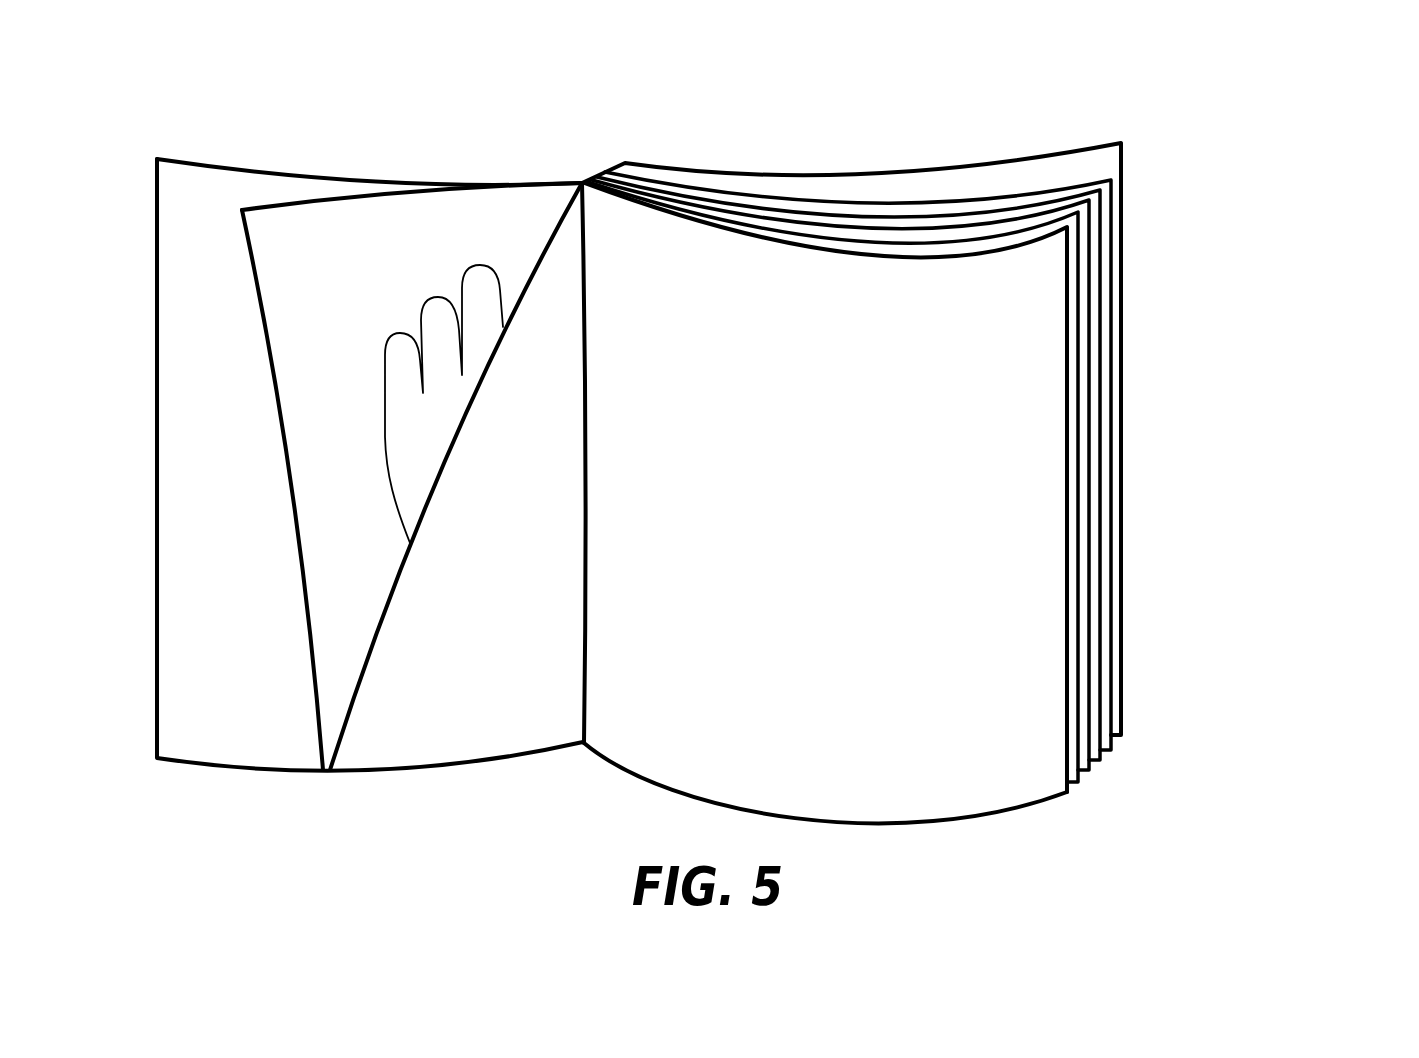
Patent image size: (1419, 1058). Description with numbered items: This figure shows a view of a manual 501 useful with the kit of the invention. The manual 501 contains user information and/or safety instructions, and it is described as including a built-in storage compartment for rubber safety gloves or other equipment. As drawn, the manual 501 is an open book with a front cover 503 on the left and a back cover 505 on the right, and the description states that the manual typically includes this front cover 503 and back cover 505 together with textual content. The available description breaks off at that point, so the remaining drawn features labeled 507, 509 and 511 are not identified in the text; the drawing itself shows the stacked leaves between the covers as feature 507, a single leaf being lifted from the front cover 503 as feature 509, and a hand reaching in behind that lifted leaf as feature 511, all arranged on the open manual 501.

The manual 501 is at (731, 442).
The front cover 503 is at (182, 567).
The back cover 505 is at (1008, 163).
The pages 507 is at (671, 202).
The page being turned 509 is at (507, 184).
The hand 511 is at (397, 337).